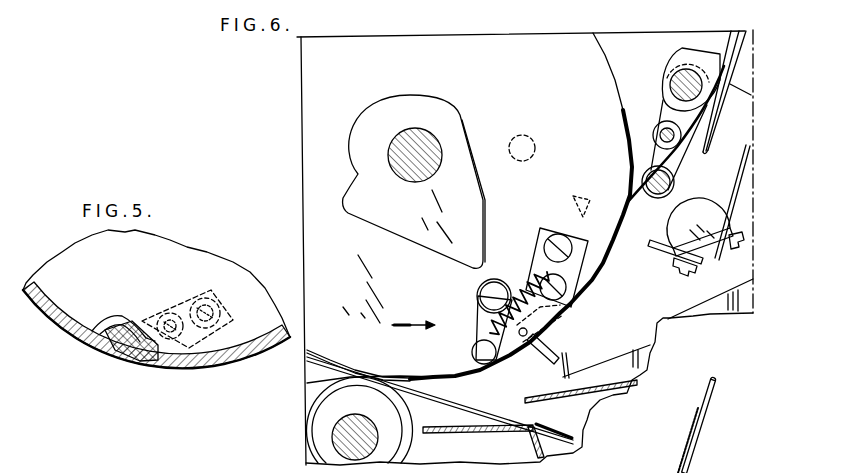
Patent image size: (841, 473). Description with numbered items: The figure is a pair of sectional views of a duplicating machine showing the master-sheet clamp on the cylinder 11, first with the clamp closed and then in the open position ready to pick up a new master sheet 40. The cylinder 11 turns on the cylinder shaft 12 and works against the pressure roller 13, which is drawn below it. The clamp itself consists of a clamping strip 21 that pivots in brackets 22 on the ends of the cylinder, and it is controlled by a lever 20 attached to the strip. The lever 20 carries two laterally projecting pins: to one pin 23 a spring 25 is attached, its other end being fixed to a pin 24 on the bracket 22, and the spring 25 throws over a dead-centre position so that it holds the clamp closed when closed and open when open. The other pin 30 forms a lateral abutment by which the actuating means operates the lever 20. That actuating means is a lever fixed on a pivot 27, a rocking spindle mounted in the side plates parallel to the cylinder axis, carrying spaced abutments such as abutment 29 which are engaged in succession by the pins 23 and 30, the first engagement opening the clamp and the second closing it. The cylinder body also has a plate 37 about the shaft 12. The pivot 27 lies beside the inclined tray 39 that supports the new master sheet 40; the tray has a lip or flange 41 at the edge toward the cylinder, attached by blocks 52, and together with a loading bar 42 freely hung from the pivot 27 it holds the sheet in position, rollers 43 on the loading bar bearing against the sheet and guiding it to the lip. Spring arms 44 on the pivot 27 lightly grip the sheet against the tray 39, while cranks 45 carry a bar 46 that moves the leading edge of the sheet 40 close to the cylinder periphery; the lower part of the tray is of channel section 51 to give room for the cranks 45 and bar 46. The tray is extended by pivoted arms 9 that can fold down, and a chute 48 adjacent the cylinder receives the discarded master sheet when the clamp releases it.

In FIG. 6, the arms 9 is at (700, 430).
In FIG. 5, the cylinder 11 is at (56, 317).
In FIG. 6, the cylinder 11 is at (328, 110).
In FIG. 6, the cylinder shaft 12 is at (406, 150).
In FIG. 6, the pressure roller 13 is at (387, 420).
In FIG. 6, the lever 20 is at (481, 330).
In FIG. 5, the clamping strip 21 is at (143, 358).
In FIG. 6, the clamping strip 21 is at (544, 350).
In FIG. 5, the brackets 22 is at (180, 304).
In FIG. 6, the brackets 22 is at (541, 258).
In FIG. 6, the pin 23 is at (481, 353).
In FIG. 6, the pin 24 is at (557, 240).
In FIG. 6, the spring 25 is at (500, 316).
In FIG. 6, the pivot 27 is at (670, 88).
In FIG. 6, the abutment 29 is at (578, 197).
In FIG. 6, the pin 30 is at (490, 295).
In FIG. 6, the cam plate 37 is at (442, 233).
In FIG. 6, the tray 39 is at (731, 96).
In FIG. 6, the new master sheet 40 is at (637, 187).
In FIG. 6, the lip or flange 41 is at (660, 252).
In FIG. 6, the loading bar 42 is at (655, 130).
In FIG. 6, the rollers or flanges 43 is at (655, 140).
In FIG. 6, the spring arms 44 is at (720, 57).
In FIG. 6, the cranks 45 is at (676, 165).
In FIG. 6, the bar 46 is at (660, 197).
In FIG. 6, the chute 48 is at (612, 383).
In FIG. 6, the channel section 51 is at (738, 187).
In FIG. 6, the blocks 52 is at (709, 226).